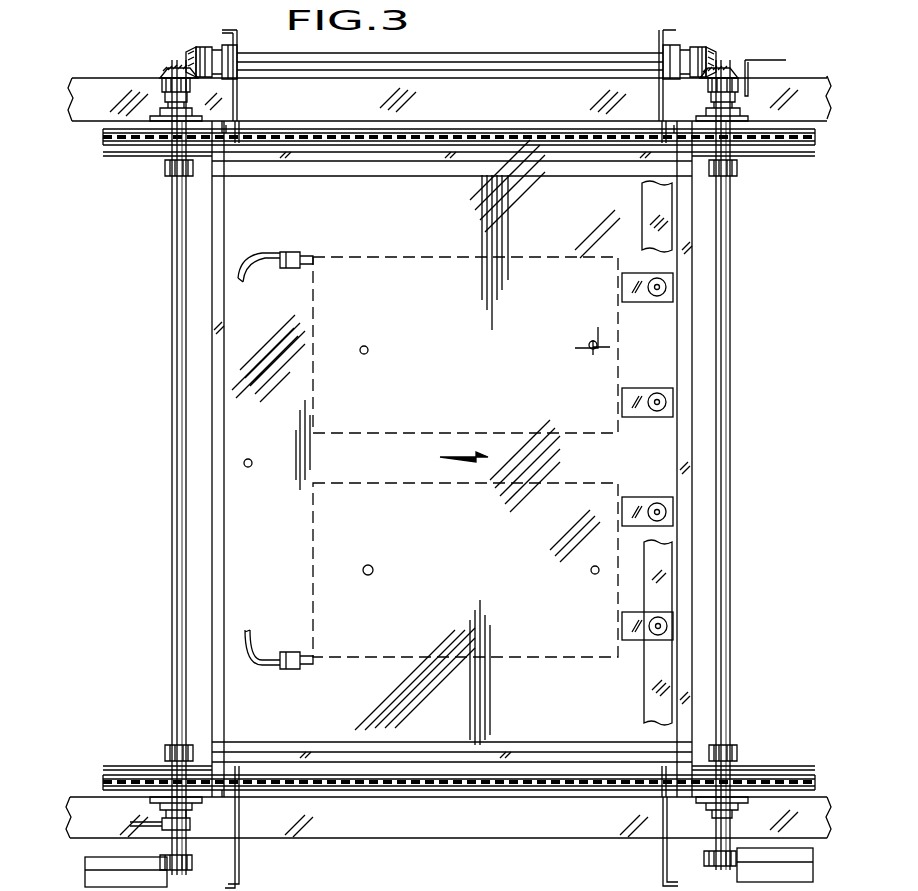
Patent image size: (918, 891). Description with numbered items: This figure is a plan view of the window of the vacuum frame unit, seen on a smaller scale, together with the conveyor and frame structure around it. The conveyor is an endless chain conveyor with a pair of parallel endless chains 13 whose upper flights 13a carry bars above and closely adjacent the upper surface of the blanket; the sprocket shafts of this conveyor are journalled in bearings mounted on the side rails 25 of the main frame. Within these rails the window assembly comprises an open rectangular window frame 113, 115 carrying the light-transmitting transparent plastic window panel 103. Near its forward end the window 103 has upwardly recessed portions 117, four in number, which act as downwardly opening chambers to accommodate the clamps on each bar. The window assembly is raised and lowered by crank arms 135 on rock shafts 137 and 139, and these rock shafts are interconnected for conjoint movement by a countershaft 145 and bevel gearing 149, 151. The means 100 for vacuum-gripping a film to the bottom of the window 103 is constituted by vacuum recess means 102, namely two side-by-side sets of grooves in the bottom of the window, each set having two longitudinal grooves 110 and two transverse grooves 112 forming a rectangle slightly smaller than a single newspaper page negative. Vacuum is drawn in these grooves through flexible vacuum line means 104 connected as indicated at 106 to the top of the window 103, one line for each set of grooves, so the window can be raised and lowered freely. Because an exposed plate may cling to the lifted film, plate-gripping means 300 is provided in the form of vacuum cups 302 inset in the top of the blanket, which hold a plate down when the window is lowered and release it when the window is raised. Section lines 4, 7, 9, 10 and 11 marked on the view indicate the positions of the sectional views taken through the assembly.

The side rails 25 is at (560, 78).
The countershaft 145 is at (450, 53).
The bevel gearing 149 is at (183, 66).
The bevel gearing 151 is at (160, 76).
The rock shaft 137 is at (172, 300).
The rock shaft 139 is at (735, 250).
The crank arms 135 is at (186, 175).
The endless chains 13 is at (338, 97).
The upper flights 13a is at (520, 135).
The window frame 115 is at (222, 445).
The window frame 113 is at (526, 165).
The window panel 103 is at (240, 545).
The upwardly recessed portions 117 is at (645, 305).
The vacuum recess means 102 is at (458, 228).
The vacuum line means 104 is at (298, 222).
The connection 106 is at (322, 253).
The longitudinal grooves 110 is at (550, 262).
The transverse grooves 112 is at (313, 335).
The vacuum cups 302 is at (370, 352).
The plate-gripping means 300 is at (362, 400).
The film-gripping means 100 is at (404, 705).
The section line 7 is at (262, 350).
The section line 10 is at (285, 505).
The section line 9 is at (340, 545).
The section line 11 is at (241, 630).
The section line 4 is at (576, 592).